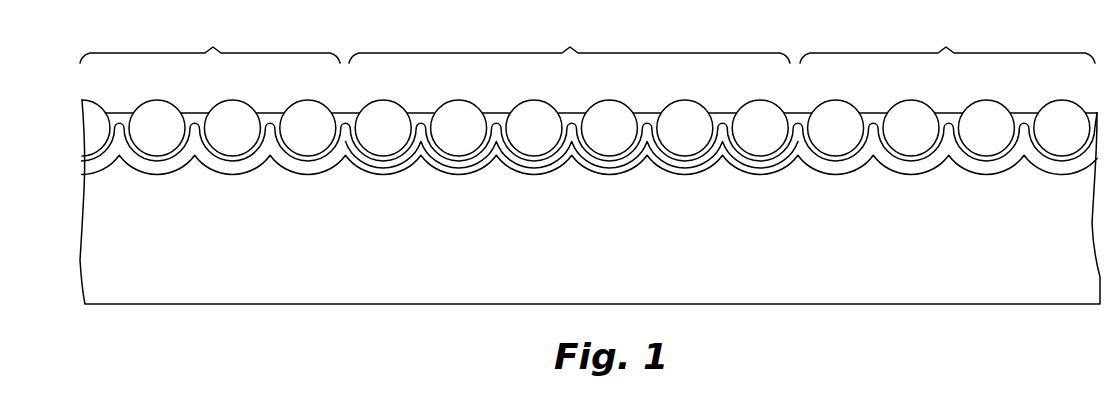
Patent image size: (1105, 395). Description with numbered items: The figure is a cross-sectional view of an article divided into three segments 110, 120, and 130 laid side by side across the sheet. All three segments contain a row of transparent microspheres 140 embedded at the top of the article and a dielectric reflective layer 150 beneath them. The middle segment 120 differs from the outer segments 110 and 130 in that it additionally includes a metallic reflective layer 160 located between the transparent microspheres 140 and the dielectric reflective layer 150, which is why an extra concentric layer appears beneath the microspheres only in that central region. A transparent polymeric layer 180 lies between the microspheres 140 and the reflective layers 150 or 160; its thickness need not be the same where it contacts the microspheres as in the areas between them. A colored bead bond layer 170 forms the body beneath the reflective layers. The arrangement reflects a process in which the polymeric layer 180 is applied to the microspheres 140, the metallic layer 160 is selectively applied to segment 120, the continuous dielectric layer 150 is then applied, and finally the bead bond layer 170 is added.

The segment 110 is at (210, 42).
The segment 120 is at (569, 42).
The segment 130 is at (947, 42).
The transparent microspheres 140 is at (290, 142).
The dielectric reflective layer 150 is at (167, 170).
The metallic reflective layer 160 is at (390, 165).
The bead bond layer 170 is at (803, 295).
The transparent polymeric layer 180 is at (420, 120).